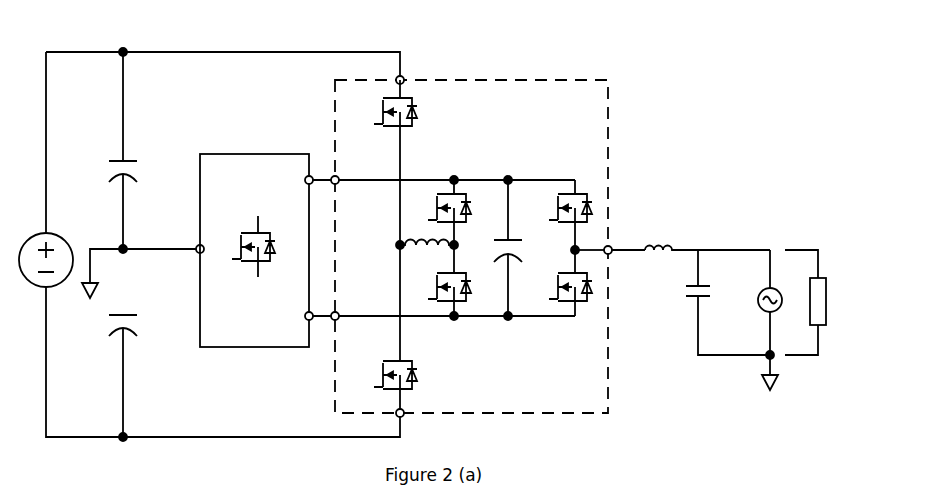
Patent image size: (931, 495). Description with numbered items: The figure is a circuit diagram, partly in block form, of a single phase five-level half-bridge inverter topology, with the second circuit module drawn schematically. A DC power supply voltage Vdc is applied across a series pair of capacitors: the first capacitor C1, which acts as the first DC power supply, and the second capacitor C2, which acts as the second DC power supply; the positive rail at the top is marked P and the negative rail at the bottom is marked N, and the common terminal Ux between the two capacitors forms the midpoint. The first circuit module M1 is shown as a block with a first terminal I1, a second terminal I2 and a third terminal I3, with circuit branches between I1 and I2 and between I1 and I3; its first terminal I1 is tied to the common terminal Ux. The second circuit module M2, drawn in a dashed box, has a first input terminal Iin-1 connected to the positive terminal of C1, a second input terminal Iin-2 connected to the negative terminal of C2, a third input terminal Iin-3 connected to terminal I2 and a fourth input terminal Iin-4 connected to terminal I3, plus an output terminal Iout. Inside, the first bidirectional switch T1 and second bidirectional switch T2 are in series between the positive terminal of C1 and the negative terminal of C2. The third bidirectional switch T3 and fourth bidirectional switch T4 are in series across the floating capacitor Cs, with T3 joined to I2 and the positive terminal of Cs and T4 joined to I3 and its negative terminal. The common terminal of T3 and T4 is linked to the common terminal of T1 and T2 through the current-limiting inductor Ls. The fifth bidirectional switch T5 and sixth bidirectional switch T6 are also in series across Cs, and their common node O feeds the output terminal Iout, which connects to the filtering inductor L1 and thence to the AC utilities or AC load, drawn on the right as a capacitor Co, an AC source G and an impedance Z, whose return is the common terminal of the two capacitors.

The positive DC rail node P is at (112, 66).
The negative DC rail node N is at (111, 425).
The first capacitor C1 is at (106, 171).
The second capacitor C2 is at (104, 328).
The DC power supply voltage Vdc is at (53, 248).
The common terminal Ux is at (118, 271).
The first terminal I1 is at (173, 255).
The second terminal I2 is at (298, 185).
The third terminal I3 is at (298, 317).
The first circuit module M1 is at (250, 148).
The second circuit module M2 is at (614, 166).
The first input terminal Iin-1 is at (419, 68).
The second input terminal Iin-2 is at (419, 429).
The third input terminal Iin-3 is at (353, 196).
The fourth input terminal Iin-4 is at (353, 303).
The first bidirectional switch T1 is at (381, 104).
The second bidirectional switch T2 is at (381, 376).
The third bidirectional switch T3 is at (438, 210).
The fourth bidirectional switch T4 is at (438, 282).
The fifth bidirectional switch T5 is at (558, 215).
The sixth bidirectional switch T6 is at (558, 283).
The current-limiting inductor Ls is at (427, 258).
The floating capacitor Cs is at (493, 248).
The output node O is at (581, 250).
The output terminal Iout is at (628, 233).
The filtering inductor L1 is at (707, 266).
The output filter capacitor Co is at (718, 302).
The grid / AC source G is at (749, 320).
The load impedance Z is at (815, 302).